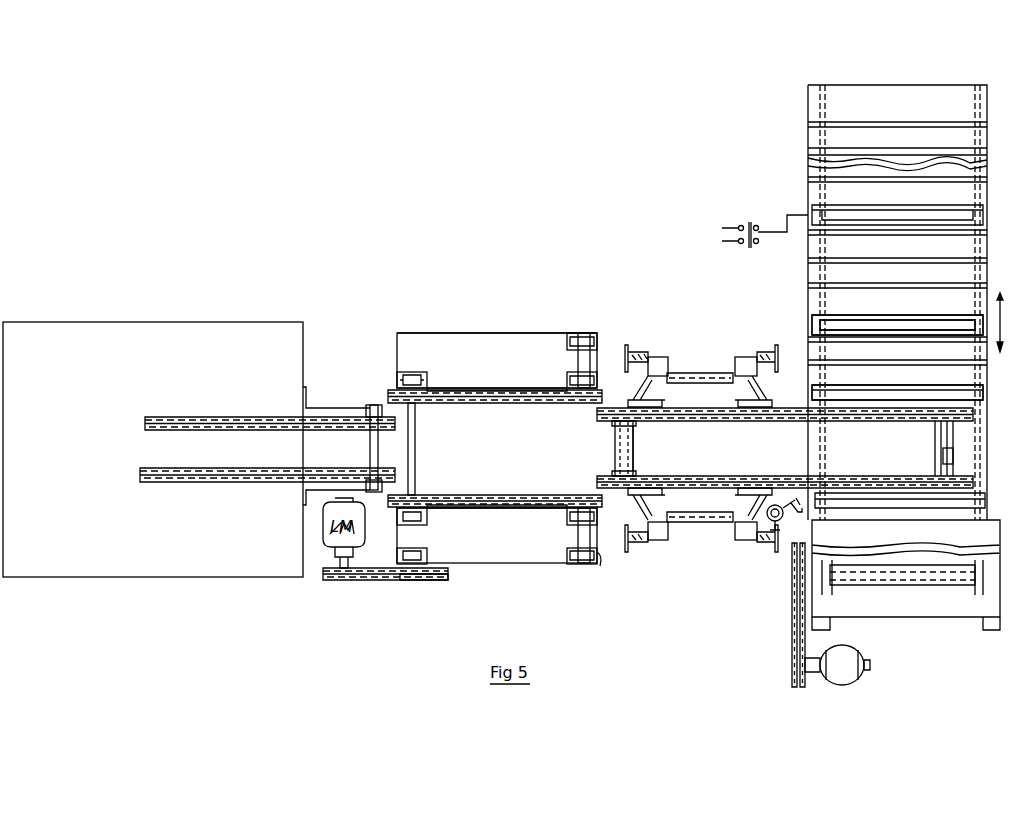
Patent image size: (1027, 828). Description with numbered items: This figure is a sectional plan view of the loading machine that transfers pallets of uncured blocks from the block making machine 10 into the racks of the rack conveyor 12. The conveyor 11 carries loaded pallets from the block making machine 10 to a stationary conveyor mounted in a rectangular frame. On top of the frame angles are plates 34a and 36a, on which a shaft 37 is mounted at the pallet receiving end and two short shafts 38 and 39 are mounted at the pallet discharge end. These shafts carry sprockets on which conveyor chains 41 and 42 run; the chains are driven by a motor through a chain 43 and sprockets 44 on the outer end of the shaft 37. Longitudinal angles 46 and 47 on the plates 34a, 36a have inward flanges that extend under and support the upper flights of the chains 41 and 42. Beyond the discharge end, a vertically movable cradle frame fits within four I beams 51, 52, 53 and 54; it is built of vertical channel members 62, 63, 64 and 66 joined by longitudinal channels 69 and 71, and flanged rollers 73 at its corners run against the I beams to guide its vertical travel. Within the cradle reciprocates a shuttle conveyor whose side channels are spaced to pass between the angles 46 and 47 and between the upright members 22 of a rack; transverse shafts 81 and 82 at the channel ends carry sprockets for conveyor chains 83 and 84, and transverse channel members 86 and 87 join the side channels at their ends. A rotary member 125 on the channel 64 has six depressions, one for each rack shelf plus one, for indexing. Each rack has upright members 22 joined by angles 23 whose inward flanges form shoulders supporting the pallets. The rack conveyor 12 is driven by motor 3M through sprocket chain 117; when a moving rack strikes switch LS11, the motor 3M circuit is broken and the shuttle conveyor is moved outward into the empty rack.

The block making machine 10 is at (214, 322).
The conveyor 11 is at (482, 332).
The rack conveyor 12 is at (808, 185).
The upright members 22 is at (832, 386).
The angles 23 is at (897, 400).
The plate 34a is at (450, 326).
The plate 36a is at (522, 564).
The shaft 37 is at (416, 437).
The short shaft 38 is at (592, 353).
The short shaft 39 is at (600, 557).
The conveyor chain 41 is at (500, 406).
The conveyor chain 42 is at (496, 495).
The chain 43 is at (374, 582).
The sprockets 44 is at (432, 581).
The angle 46 is at (497, 370).
The angle 47 is at (494, 508).
The I beam 51 is at (634, 348).
The I beam 52 is at (771, 351).
The I beam 53 is at (644, 551).
The I beam 54 is at (757, 547).
The channel member 62 is at (660, 386).
The channel member 63 is at (745, 385).
The channel member 64 is at (657, 524).
The channel member 66 is at (745, 524).
The channel member 69 is at (716, 374).
The channel member 71 is at (702, 524).
The flanged rollers 73 is at (666, 358).
The transverse shaft 81 is at (612, 455).
The transverse shaft 82 is at (942, 456).
The conveyor chain 83 is at (720, 422).
The conveyor chain 84 is at (752, 462).
The transverse channel member 86 is at (636, 462).
The transverse channel member 87 is at (933, 432).
The sprocket chain 117 is at (792, 633).
The rotary member 125 is at (769, 532).
The switch LS11 is at (746, 250).
The motor 3M is at (838, 684).